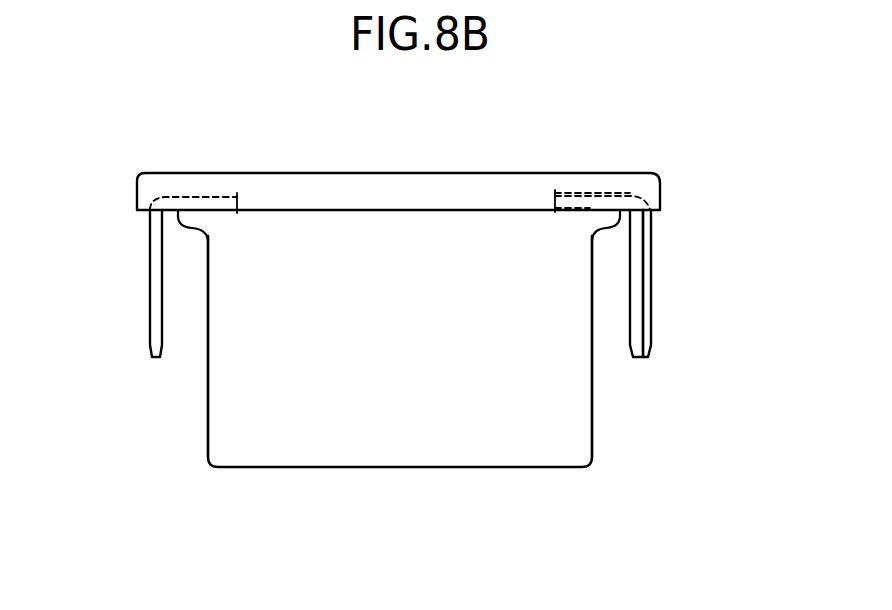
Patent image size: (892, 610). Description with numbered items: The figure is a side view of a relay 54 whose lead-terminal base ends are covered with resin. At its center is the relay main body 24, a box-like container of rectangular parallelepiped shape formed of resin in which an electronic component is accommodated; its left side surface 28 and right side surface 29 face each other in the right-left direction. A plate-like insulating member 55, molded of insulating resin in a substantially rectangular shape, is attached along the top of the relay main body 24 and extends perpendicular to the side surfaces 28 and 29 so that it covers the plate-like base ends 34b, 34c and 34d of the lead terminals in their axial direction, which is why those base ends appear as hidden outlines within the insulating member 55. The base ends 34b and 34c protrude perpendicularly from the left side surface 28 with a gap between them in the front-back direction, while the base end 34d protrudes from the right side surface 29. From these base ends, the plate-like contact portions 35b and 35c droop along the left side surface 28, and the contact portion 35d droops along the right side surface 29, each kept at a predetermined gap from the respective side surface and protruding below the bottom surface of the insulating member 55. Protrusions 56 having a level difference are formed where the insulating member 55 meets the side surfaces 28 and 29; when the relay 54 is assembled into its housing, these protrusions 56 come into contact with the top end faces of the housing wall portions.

The relay main body 24 is at (410, 338).
The left side surface 28 is at (208, 385).
The right side surface 29 is at (592, 358).
The relay 54 is at (406, 153).
The insulating member 55 is at (222, 173).
The protrusions 56 is at (190, 230).
The base end 34b is at (621, 192).
The base end 34c is at (629, 192).
The base end 34d is at (180, 194).
The contact portion 35b is at (651, 303).
The contact portion 35c is at (643, 275).
The contact portion 35d is at (150, 303).